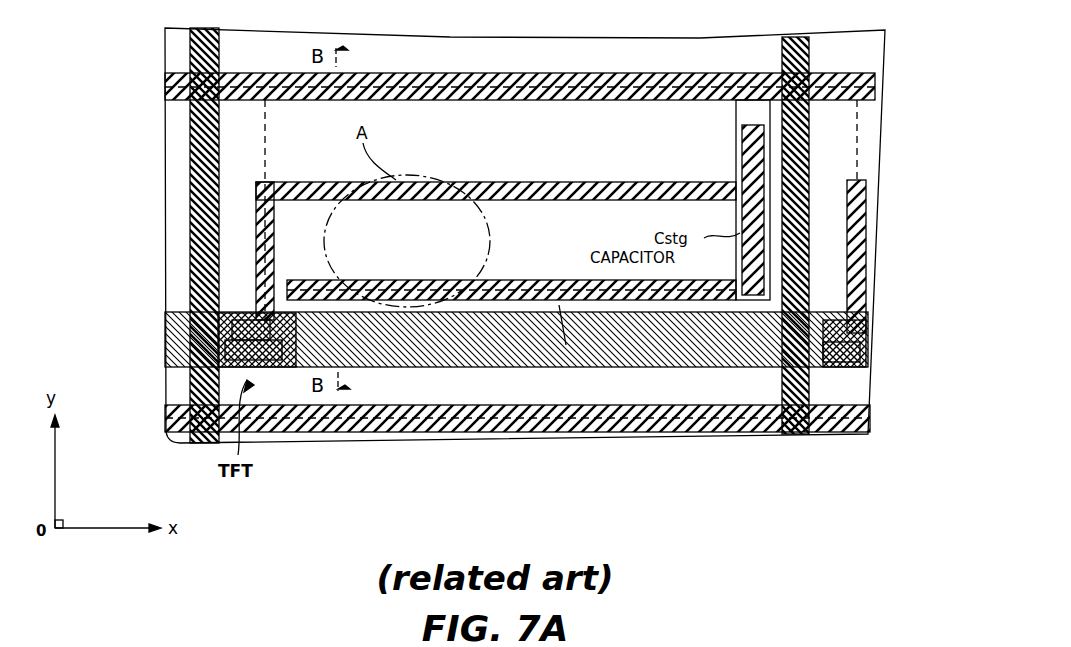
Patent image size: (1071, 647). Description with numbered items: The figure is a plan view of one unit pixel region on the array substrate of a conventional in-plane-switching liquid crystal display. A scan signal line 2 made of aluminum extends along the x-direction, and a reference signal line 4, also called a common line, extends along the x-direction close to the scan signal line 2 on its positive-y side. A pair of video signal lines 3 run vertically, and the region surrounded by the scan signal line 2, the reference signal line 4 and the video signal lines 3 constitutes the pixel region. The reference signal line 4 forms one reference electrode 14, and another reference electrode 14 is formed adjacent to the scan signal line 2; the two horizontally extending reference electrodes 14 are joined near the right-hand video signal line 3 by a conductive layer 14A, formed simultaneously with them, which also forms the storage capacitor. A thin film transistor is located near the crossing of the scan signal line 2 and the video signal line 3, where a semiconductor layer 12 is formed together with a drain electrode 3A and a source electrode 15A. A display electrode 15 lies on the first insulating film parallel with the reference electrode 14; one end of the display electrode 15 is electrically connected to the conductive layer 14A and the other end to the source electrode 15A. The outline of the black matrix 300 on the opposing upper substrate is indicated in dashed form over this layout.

The scan signal line 2 is at (672, 355).
The video signal line 3 is at (190, 155).
The drain electrode 3A is at (369, 436).
The reference signal line 4 is at (643, 73).
The semiconductor layer 12 is at (240, 336).
The reference electrode 14 is at (480, 300).
The conductive layer 14A is at (847, 240).
The display electrode 15 is at (447, 195).
The source electrode 15A is at (262, 310).
The black matrix 300 is at (566, 345).